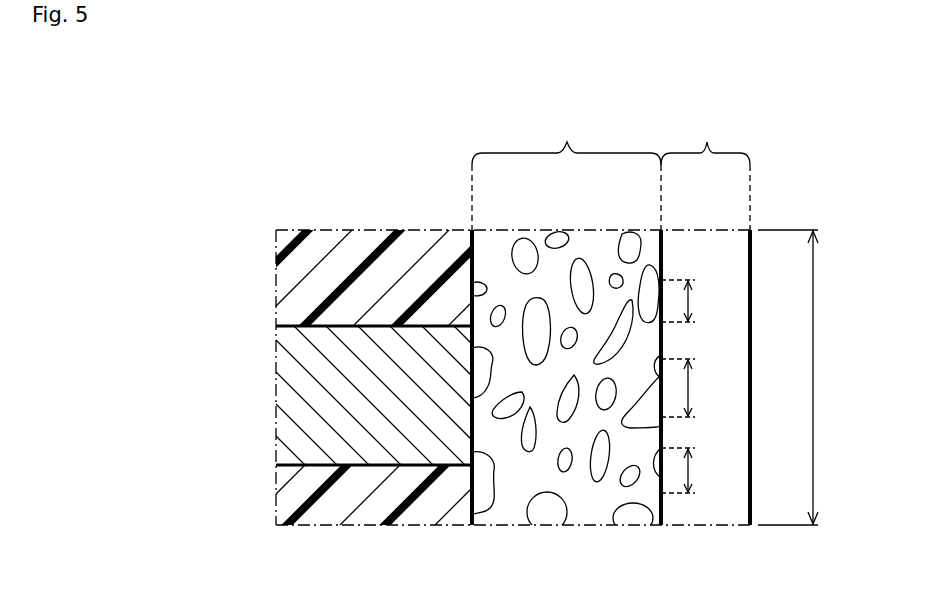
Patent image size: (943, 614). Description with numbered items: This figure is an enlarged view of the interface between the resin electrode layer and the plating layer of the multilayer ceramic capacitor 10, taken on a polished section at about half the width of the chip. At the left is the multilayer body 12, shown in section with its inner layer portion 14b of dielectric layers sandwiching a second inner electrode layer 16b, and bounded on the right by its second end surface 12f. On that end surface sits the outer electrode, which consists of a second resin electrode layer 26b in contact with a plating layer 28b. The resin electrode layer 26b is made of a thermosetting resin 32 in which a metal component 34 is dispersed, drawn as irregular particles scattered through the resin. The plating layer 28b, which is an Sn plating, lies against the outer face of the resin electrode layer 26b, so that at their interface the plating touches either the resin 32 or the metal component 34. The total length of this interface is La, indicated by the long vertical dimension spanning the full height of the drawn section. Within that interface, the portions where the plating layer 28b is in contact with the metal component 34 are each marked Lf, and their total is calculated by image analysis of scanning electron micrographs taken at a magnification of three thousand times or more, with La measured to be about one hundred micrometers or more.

The multilayer ceramic capacitor 10 is at (289, 209).
The multilayer body 12 is at (384, 368).
The second end surface 12f is at (483, 231).
The inner layer portion 14b is at (288, 282).
The second inner electrode layer 16b is at (370, 445).
The second resin electrode layer 26b is at (566, 345).
The plating layer 28b is at (705, 315).
The thermosetting resin 32 is at (594, 500).
The metal component 34 is at (588, 282).
The contact length Lf is at (694, 386).
The interface length La is at (805, 377).